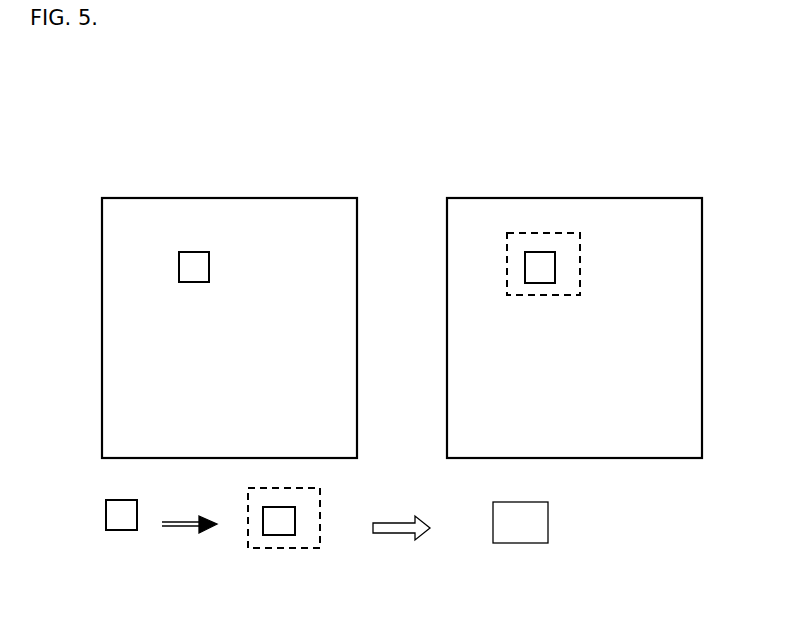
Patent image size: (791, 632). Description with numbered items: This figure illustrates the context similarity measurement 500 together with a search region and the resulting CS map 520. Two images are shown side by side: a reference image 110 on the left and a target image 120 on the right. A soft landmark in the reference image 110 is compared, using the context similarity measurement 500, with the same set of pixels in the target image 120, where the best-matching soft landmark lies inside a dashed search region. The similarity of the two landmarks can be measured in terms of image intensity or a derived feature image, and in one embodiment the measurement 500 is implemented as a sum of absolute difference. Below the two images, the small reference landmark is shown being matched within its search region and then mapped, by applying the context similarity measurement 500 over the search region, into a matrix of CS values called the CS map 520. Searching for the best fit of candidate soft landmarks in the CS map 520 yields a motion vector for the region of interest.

The context similarity measurement 500 is at (386, 136).
The reference image 110 is at (186, 196).
The target image 120 is at (535, 196).
The CS map 520 is at (552, 503).